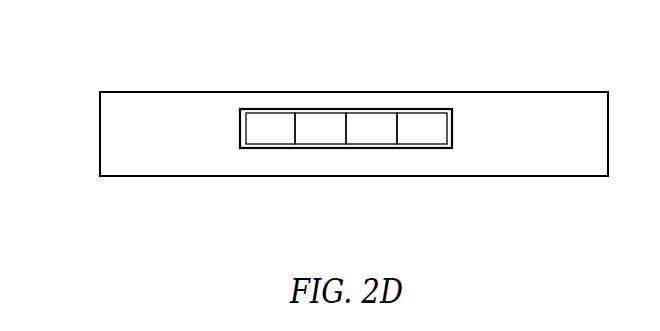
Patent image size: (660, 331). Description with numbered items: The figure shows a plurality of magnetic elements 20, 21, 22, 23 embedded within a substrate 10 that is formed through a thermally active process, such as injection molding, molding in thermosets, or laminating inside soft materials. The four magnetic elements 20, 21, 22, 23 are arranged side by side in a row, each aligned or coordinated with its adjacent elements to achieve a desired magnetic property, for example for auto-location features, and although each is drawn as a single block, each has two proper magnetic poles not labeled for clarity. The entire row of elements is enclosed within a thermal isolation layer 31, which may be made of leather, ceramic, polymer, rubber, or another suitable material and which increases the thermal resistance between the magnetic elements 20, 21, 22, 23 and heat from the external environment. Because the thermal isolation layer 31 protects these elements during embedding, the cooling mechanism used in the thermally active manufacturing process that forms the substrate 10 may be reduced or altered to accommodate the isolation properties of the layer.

The substrate 10 is at (583, 92).
The magnetic element 20 is at (272, 150).
The magnetic element 21 is at (321, 107).
The magnetic element 22 is at (373, 150).
The magnetic element 23 is at (422, 107).
The thermal isolation layer 31 is at (452, 109).